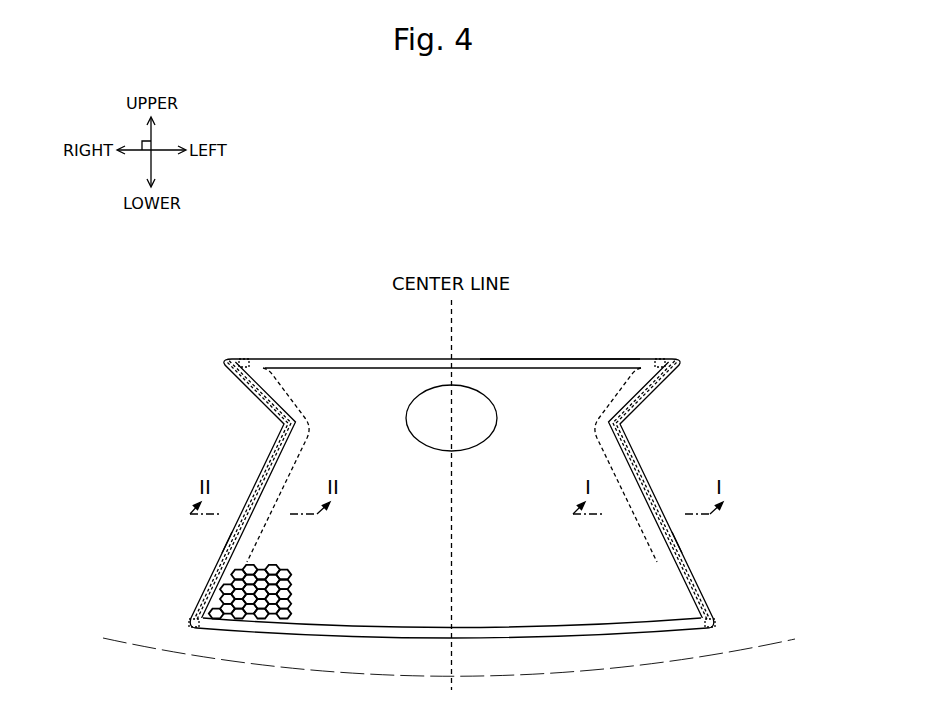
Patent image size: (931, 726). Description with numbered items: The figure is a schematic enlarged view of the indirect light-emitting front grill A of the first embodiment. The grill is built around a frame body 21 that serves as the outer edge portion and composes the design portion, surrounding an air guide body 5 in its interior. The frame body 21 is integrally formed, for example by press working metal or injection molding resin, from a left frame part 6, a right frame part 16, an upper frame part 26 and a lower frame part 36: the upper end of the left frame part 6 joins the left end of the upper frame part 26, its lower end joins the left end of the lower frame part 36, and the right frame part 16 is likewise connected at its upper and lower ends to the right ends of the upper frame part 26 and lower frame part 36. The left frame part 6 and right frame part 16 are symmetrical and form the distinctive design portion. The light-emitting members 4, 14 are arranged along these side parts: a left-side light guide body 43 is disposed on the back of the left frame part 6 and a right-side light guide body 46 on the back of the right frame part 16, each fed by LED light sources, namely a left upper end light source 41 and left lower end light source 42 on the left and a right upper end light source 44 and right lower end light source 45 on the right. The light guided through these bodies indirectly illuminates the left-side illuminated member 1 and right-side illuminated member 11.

The indirect light-emitting front grill A is at (318, 256).
The left-side illuminated member 1 is at (626, 370).
The light-emitting member 4 is at (785, 362).
The air guide body 5 is at (246, 610).
The left frame part 6 is at (677, 543).
The right-side illuminated member 11 is at (271, 383).
The light-emitting member 14 is at (118, 362).
The right frame part 16 is at (227, 543).
The frame body 21 is at (560, 350).
The upper frame part 26 is at (330, 359).
The lower frame part 36 is at (614, 633).
The left upper end light source 41 is at (660, 364).
The left lower end light source 42 is at (713, 617).
The left-side light guide body 43 is at (625, 450).
The right upper end light source 44 is at (244, 364).
The right lower end light source 45 is at (191, 619).
The right-side light guide body 46 is at (279, 450).